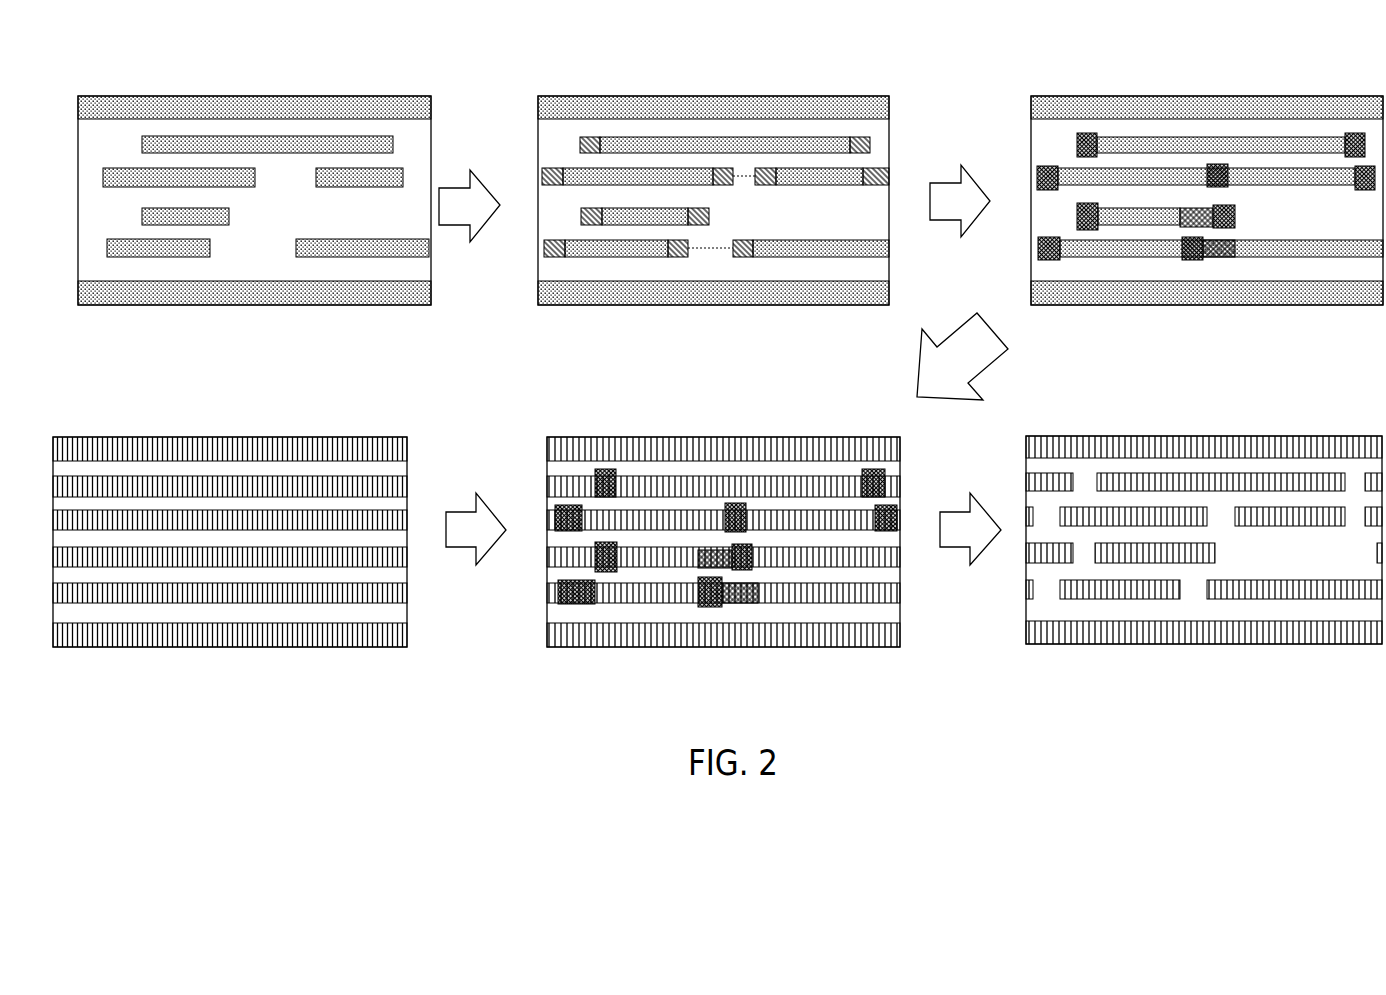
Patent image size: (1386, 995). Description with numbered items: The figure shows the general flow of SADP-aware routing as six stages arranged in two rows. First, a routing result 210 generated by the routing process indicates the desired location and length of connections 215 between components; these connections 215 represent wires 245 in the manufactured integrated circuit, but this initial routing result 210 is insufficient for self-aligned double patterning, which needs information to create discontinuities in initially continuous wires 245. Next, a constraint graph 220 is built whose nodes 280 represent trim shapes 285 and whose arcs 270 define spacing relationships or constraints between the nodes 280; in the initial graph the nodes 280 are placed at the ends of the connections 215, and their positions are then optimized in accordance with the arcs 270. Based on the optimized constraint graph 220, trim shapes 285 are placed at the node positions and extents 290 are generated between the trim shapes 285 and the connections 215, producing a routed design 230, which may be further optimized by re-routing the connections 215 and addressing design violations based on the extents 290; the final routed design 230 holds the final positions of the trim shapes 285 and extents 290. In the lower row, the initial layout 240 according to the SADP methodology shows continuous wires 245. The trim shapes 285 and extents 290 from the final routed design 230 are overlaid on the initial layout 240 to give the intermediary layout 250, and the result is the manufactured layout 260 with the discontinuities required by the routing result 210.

The routing result 210 is at (254, 171).
The connections 215 is at (328, 160).
The constraint graph 220 is at (718, 177).
The arcs 270 is at (591, 219).
The nodes 280 is at (876, 165).
The routed design 230 is at (1207, 207).
The trim shapes 285 is at (1222, 160).
The extents 290 is at (1205, 230).
The initial layout 240 is at (230, 561).
The wires 245 is at (177, 609).
The intermediary layout 250 is at (654, 437).
The manufactured layout 260 is at (1162, 436).